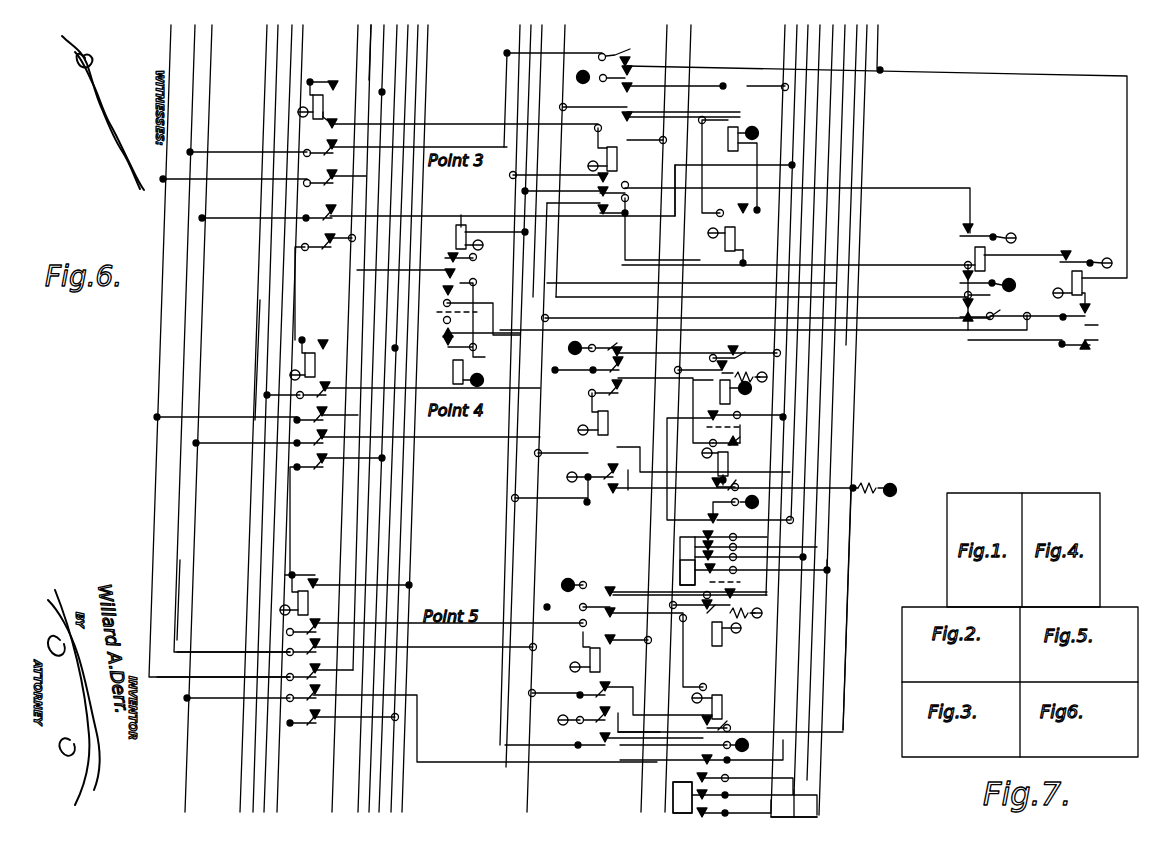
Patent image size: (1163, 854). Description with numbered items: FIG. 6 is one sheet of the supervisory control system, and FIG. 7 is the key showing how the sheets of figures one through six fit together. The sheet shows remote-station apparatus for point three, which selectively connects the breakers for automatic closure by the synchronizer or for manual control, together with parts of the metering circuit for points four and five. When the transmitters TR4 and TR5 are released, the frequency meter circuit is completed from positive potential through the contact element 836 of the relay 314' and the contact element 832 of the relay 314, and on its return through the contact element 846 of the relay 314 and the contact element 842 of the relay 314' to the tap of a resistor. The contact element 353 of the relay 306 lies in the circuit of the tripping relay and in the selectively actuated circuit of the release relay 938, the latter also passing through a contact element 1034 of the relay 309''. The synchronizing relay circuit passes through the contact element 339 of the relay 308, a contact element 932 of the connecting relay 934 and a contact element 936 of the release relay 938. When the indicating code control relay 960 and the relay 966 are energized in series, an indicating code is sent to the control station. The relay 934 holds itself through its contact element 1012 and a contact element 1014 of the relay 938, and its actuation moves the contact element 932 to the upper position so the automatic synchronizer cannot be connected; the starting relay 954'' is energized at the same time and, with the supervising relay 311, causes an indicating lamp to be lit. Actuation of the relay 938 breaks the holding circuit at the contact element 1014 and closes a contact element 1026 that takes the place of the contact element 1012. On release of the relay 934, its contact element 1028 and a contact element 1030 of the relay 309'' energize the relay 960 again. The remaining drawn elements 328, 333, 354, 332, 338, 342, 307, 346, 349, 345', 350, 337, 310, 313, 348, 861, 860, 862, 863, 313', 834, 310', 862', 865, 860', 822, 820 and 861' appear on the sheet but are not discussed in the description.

The conductor 328 is at (383, 62).
The relay 306 is at (326, 100).
The contact element 353 is at (316, 148).
The contact 354 is at (316, 177).
The conductor 333 is at (264, 354).
The relay 307 is at (316, 360).
The contact 332 is at (306, 390).
The conductor 338 is at (178, 595).
The contact element 339 is at (298, 671).
The contact 342 is at (298, 692).
The relay 308 is at (306, 595).
The relay 966 is at (455, 232).
The indicating code control relay 960 is at (455, 373).
The relay 309'' is at (620, 159).
The contact element 1030 is at (622, 190).
The contact element 1034 is at (583, 56).
The supervising relay 311 is at (728, 137).
The starting relay 954'' is at (740, 239).
The contact element 1028 is at (985, 240).
The connecting relay 934 is at (975, 258).
The contact element 1012 is at (985, 288).
The contact element 1014 is at (1090, 258).
The release relay 938 is at (1082, 294).
The contact element 932 is at (995, 318).
The contact element 1026 is at (1080, 325).
The contact element 936 is at (1090, 340).
The contact 346 is at (594, 356).
The contact 349 is at (612, 372).
The contact 345' is at (699, 351).
The resistor 350 is at (742, 365).
The contact 337 is at (610, 385).
The relay 310 is at (609, 423).
The relay 313 is at (724, 393).
The contact 348 is at (719, 436).
The relay 314 is at (705, 462).
The conductor 861 is at (740, 469).
The contact 860 is at (736, 480).
The contact 862 is at (589, 482).
The contact element 832 is at (724, 502).
The contact element 846 is at (704, 536).
The transmitter TR4 is at (680, 582).
The resistor 863 is at (870, 484).
The relay 313' is at (714, 634).
The resistor 834 is at (787, 626).
The relay 310' is at (602, 660).
The contact 862' is at (584, 703).
The conductor 865 is at (639, 724).
The relay 314' is at (726, 706).
The contact 860' is at (731, 721).
The contact element 836 is at (703, 747).
The contact element 842 is at (704, 768).
The transmitter TR5 is at (672, 813).
The conductor 822 is at (773, 800).
The conductor 820 is at (805, 803).
The conductor 861' is at (861, 609).